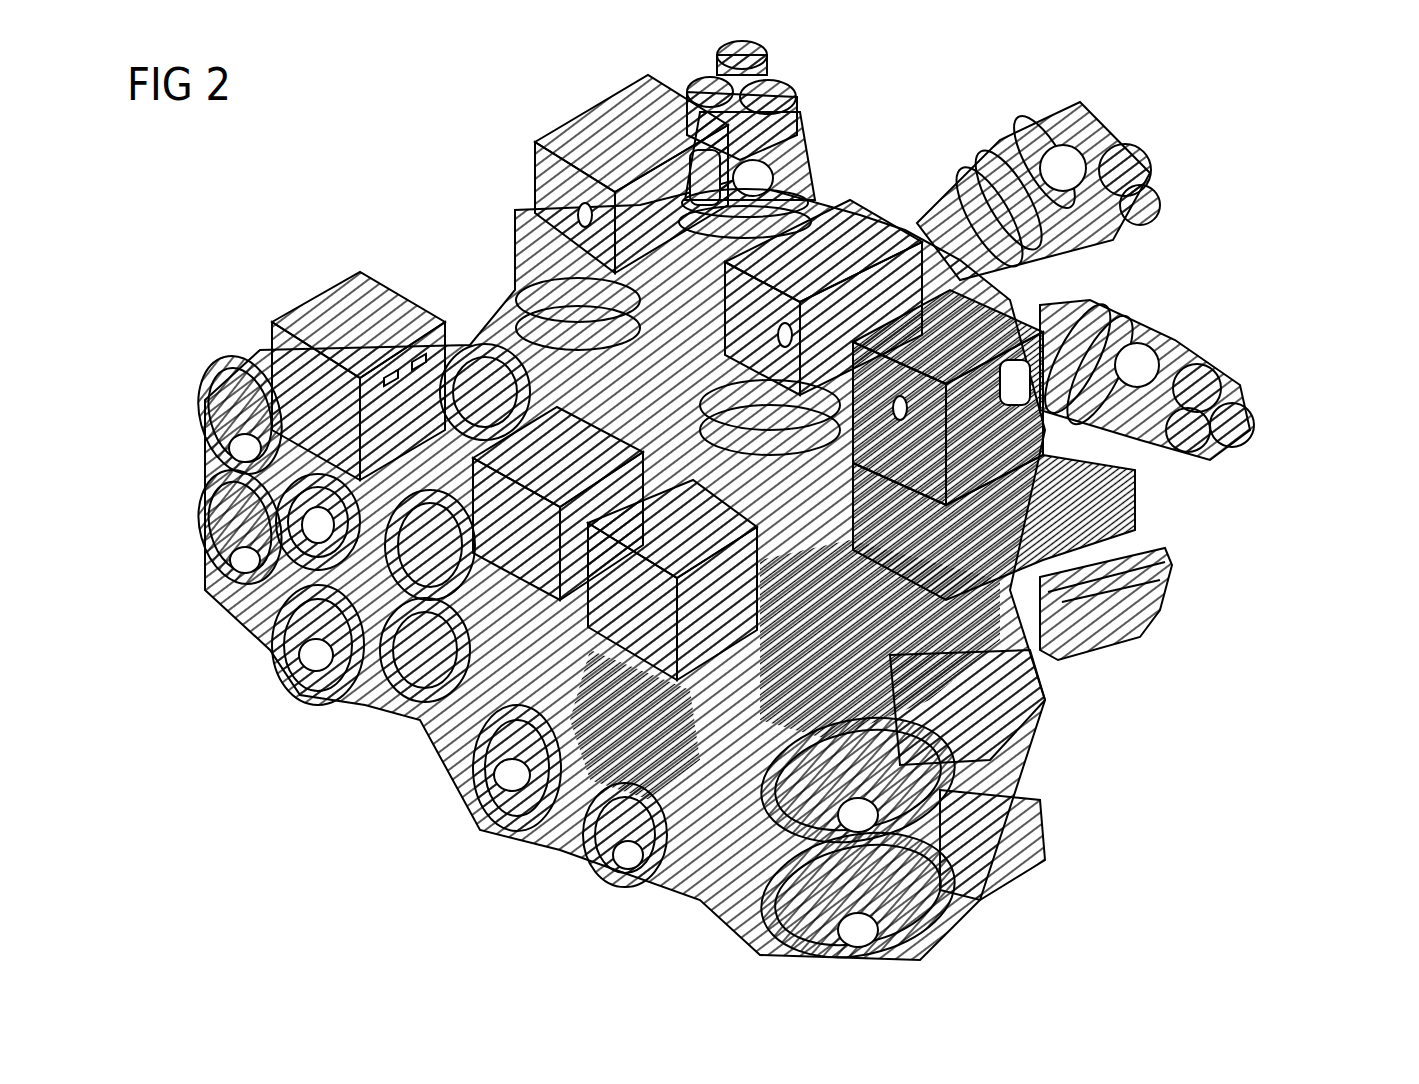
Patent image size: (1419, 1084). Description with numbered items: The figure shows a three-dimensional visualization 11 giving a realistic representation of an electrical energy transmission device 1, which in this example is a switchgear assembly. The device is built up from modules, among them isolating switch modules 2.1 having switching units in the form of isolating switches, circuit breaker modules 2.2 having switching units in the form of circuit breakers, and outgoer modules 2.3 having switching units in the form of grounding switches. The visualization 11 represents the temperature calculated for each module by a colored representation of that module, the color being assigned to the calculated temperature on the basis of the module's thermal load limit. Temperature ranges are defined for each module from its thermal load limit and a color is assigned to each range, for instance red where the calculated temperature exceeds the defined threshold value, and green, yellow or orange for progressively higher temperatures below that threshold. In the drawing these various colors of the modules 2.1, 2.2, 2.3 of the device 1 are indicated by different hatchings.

The electrical energy transmission device 1 is at (1176, 143).
The three-dimensional visualization 11 is at (426, 231).
The isolating switch module 2.1 is at (518, 820).
The circuit breaker module 2.2 is at (1010, 618).
The outgoer module 2.3 is at (1184, 581).